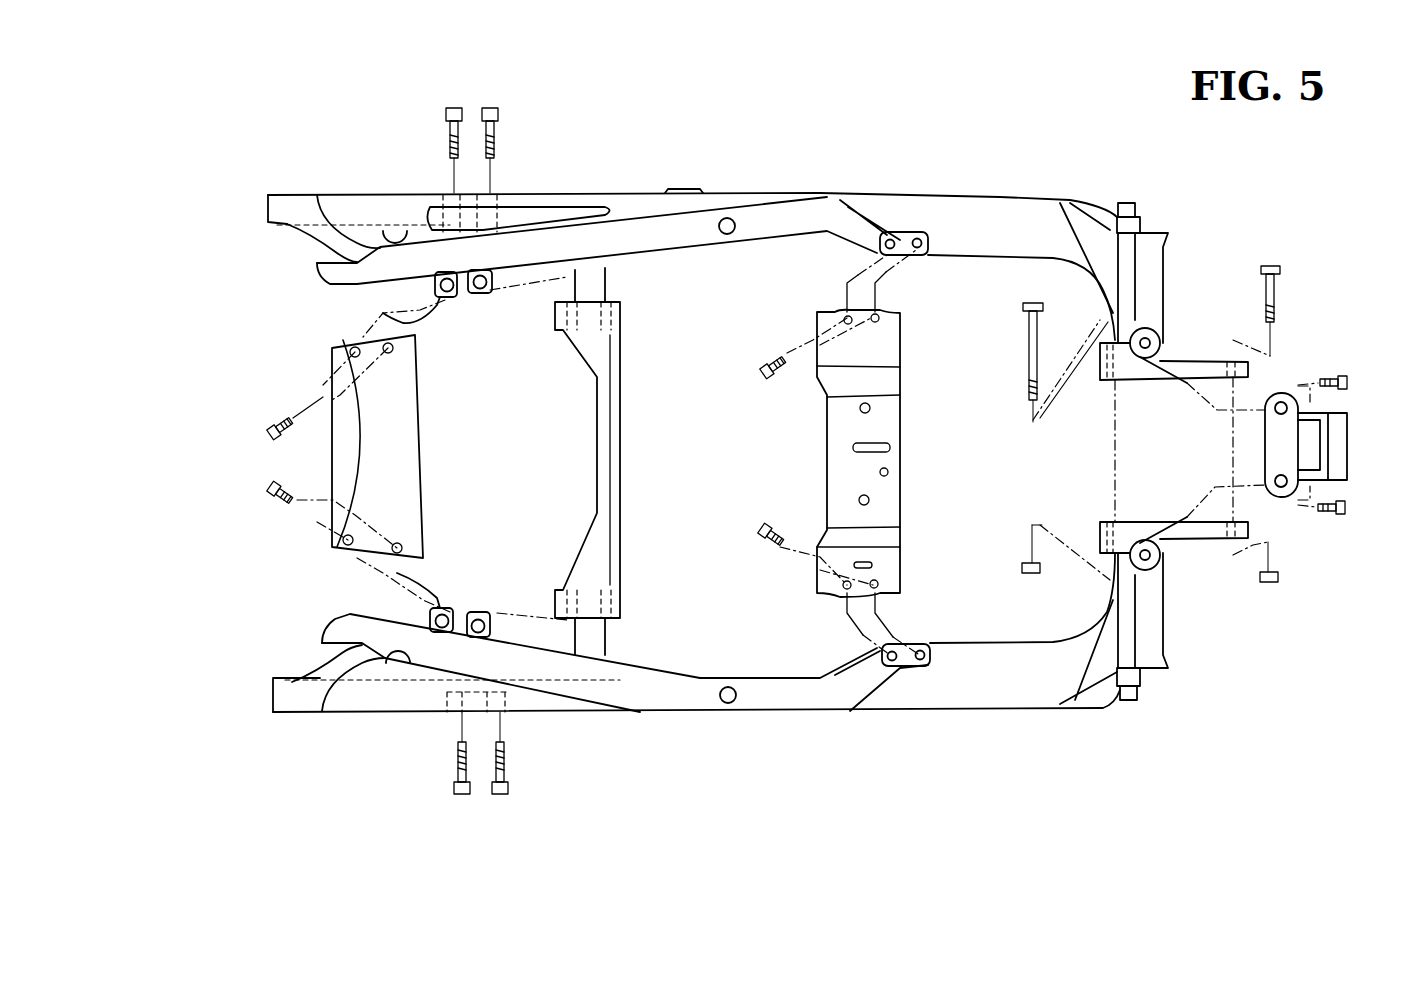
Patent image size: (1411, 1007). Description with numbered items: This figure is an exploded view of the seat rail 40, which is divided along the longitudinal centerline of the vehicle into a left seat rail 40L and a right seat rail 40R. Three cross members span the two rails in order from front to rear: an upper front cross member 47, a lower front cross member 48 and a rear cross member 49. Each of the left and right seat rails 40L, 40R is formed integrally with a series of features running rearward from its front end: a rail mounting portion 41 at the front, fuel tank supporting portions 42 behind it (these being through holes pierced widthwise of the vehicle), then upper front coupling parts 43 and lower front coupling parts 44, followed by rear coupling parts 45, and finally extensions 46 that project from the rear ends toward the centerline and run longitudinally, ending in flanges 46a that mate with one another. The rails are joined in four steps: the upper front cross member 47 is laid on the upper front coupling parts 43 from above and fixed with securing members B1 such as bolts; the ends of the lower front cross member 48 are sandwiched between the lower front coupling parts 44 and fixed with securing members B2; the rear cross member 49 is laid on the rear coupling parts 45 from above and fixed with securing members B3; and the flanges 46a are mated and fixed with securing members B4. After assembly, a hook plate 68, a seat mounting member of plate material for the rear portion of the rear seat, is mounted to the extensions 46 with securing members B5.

The seat rail 40 is at (218, 152).
The right seat rail 40R is at (766, 180).
The left seat rail 40L is at (760, 724).
The rail mounting portion 41 is at (317, 265).
The fuel tank supporting portion 42 is at (387, 228).
The upper front coupling part 43 is at (488, 295).
The lower front coupling part 44 is at (523, 163).
The rear coupling part 45 is at (902, 238).
The extension 46 is at (1157, 627).
The flange 46a is at (1217, 538).
The upper front cross member 47 is at (397, 463).
The lower front cross member 48 is at (613, 463).
The rear cross member 49 is at (893, 462).
The hook plate 68 is at (1283, 497).
The securing member B1 is at (277, 493).
The securing member B2 is at (489, 108).
The securing member B3 is at (763, 530).
The securing member B4 is at (1278, 288).
The securing member B5 is at (1330, 512).